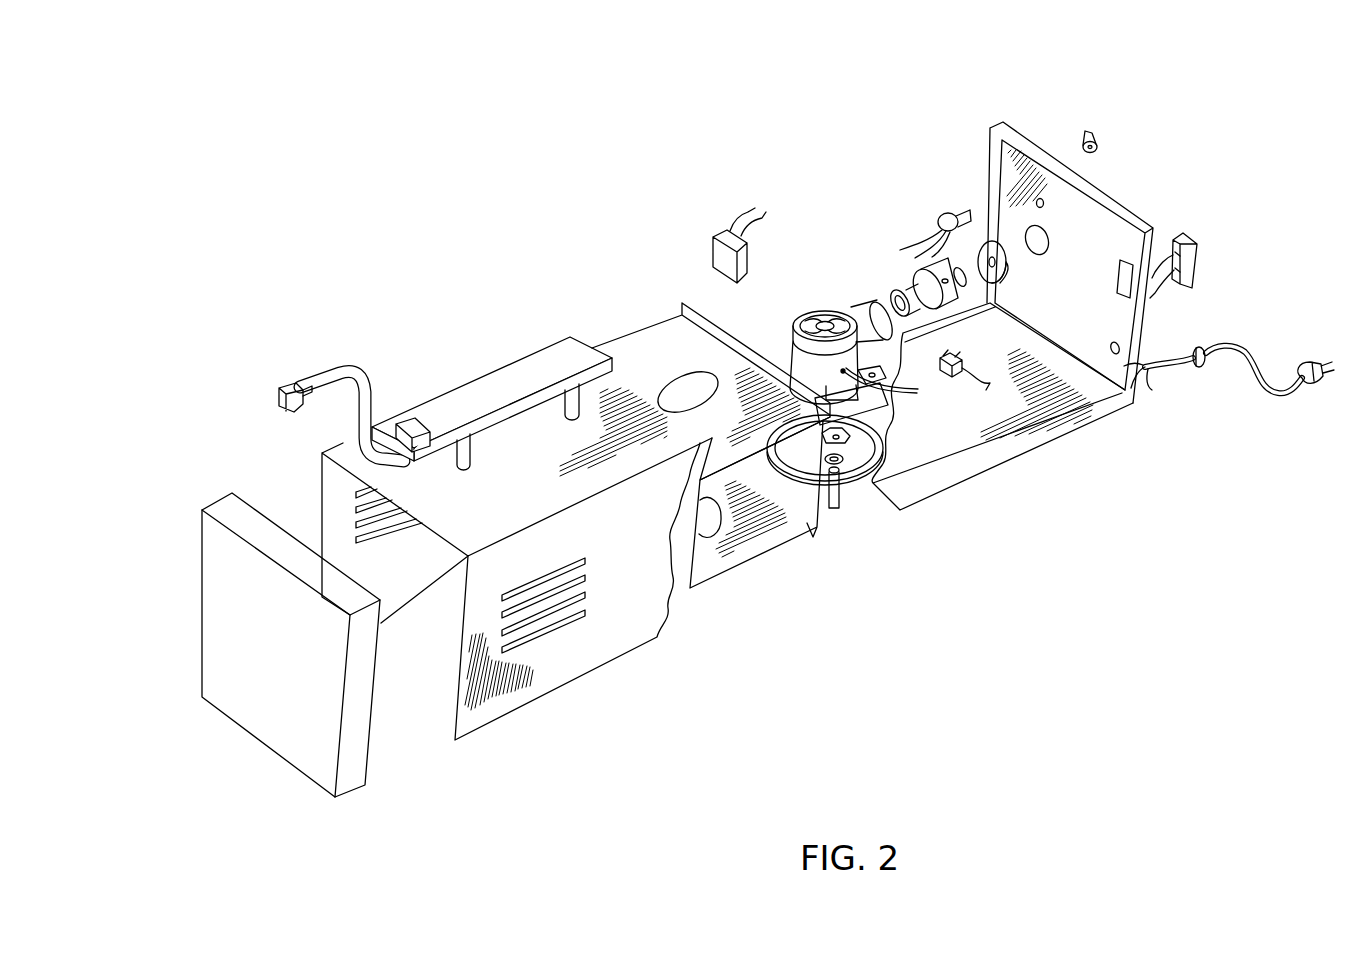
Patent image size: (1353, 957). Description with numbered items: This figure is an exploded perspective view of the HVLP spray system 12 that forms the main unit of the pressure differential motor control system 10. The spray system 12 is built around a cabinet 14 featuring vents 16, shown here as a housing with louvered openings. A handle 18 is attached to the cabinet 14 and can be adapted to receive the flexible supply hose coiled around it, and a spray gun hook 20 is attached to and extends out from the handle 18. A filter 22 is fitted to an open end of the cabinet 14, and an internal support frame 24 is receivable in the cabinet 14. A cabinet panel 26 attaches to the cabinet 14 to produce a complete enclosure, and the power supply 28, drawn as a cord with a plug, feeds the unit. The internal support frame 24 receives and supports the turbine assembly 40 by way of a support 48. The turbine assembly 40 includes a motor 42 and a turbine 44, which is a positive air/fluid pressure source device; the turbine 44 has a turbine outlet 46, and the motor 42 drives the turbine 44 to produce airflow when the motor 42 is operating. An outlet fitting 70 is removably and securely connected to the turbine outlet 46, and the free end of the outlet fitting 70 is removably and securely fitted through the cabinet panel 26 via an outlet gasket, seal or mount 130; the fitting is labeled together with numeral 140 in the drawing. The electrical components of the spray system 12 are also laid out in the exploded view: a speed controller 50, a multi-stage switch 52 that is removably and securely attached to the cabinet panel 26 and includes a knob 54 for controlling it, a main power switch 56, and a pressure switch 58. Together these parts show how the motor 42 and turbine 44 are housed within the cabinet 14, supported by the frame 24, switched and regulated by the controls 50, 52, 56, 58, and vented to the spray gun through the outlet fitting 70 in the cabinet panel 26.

The pressure differential motor control system 10 is at (350, 180).
The HVLP spray system 12 is at (507, 362).
The cabinet 14 is at (492, 720).
The vents 16 is at (555, 628).
The handle 18 is at (466, 410).
The spray gun hook 20 is at (278, 387).
The filter 22 is at (350, 790).
The internal support frame 24 is at (635, 333).
The cabinet panel 26 is at (1127, 205).
The power supply 28 is at (1257, 362).
The turbine assembly 40 is at (855, 486).
The motor 42 is at (807, 317).
The turbine 44 is at (858, 445).
The turbine outlet 46 is at (857, 310).
The support 48 is at (837, 510).
The speed controller 50 is at (697, 253).
The multi-stage switch 52 is at (950, 213).
The knob 54 is at (1097, 140).
The main power switch 56 is at (1187, 240).
The pressure switch 58 is at (948, 358).
The outlet fitting 70 is at (913, 267).
The outlet gasket, seal or mount 130 is at (1010, 275).
The fitting coupling 140 is at (842, 238).